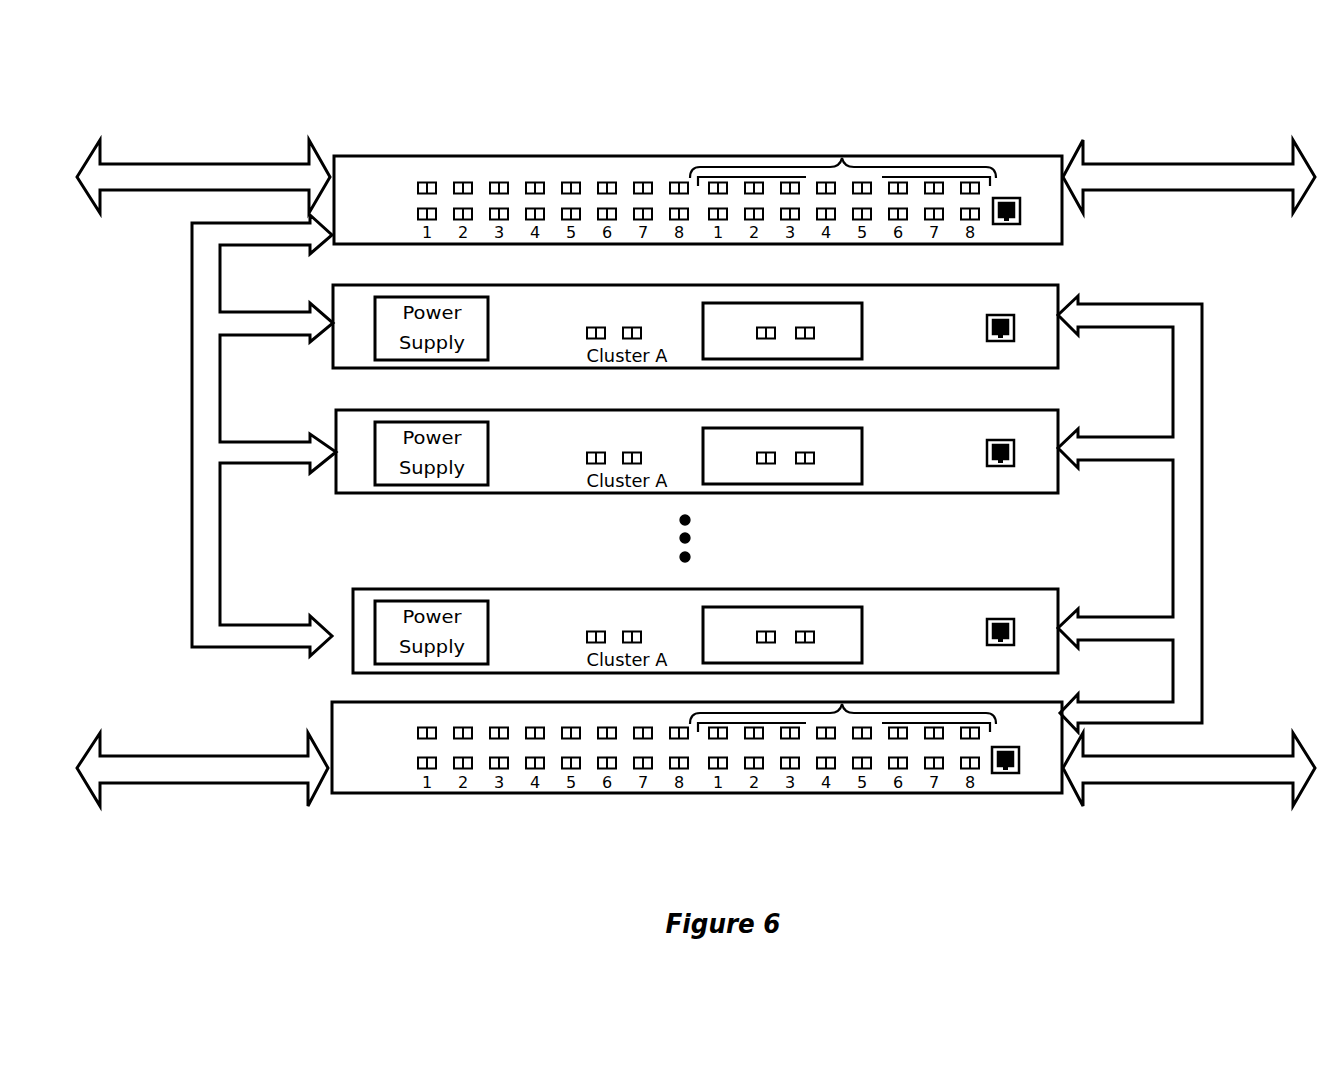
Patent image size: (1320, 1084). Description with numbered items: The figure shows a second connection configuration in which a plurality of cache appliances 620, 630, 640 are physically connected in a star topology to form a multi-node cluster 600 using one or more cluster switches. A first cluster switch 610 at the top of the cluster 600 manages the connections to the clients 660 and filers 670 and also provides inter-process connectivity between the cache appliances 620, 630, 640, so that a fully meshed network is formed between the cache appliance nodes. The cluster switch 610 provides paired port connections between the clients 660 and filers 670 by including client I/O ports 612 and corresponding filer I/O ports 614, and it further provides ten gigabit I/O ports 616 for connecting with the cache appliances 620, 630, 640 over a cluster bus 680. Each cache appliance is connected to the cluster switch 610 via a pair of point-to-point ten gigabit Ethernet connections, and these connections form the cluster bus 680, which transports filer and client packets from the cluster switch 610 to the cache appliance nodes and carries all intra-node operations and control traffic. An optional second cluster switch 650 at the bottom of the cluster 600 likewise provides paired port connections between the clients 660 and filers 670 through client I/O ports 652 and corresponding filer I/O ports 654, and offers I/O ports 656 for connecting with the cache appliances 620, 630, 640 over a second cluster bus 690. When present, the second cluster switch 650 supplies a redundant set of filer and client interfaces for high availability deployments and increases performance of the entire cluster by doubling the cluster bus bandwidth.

The multi-node cluster 600 is at (1184, 137).
The cluster switch 610 is at (718, 197).
The client I/O ports 612 is at (412, 187).
The filer I/O ports 614 is at (410, 216).
The I/O ports 616 is at (842, 160).
The cache appliance 620 is at (1058, 284).
The cache appliance 630 is at (1058, 409).
The cache appliance 640 is at (1058, 588).
The cluster switch 650 is at (712, 759).
The client I/O ports 652 is at (406, 733).
The filer I/O ports 654 is at (408, 766).
The I/O ports 656 is at (842, 706).
The clients 660 is at (203, 473).
The filers 670 is at (1189, 473).
The cluster bus 680 is at (264, 435).
The cluster bus 690 is at (1130, 514).